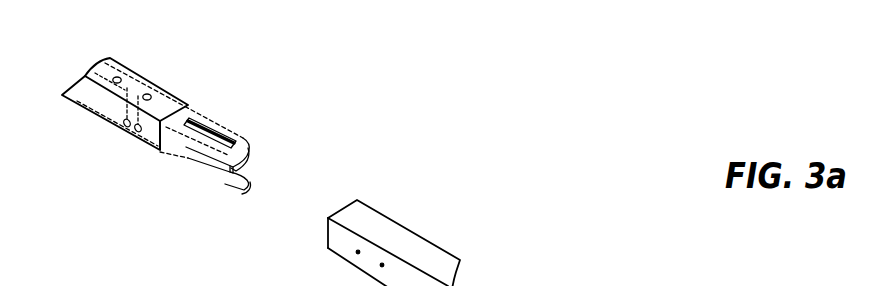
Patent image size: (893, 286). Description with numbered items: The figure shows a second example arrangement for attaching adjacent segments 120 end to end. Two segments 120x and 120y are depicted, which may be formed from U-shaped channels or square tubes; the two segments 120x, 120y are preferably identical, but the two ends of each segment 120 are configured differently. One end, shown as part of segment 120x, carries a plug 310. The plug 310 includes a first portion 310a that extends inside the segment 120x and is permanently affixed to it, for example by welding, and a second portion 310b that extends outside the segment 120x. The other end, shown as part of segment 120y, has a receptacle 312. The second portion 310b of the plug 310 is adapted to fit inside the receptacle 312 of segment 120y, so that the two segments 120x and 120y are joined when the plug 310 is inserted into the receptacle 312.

The segment 120x is at (103, 66).
The segment 120y is at (403, 242).
The plug 310 is at (193, 115).
The first portion 310a is at (115, 110).
The second portion 310b is at (192, 152).
The receptacle 312 is at (334, 214).
The segment 120 is at (191, 282).